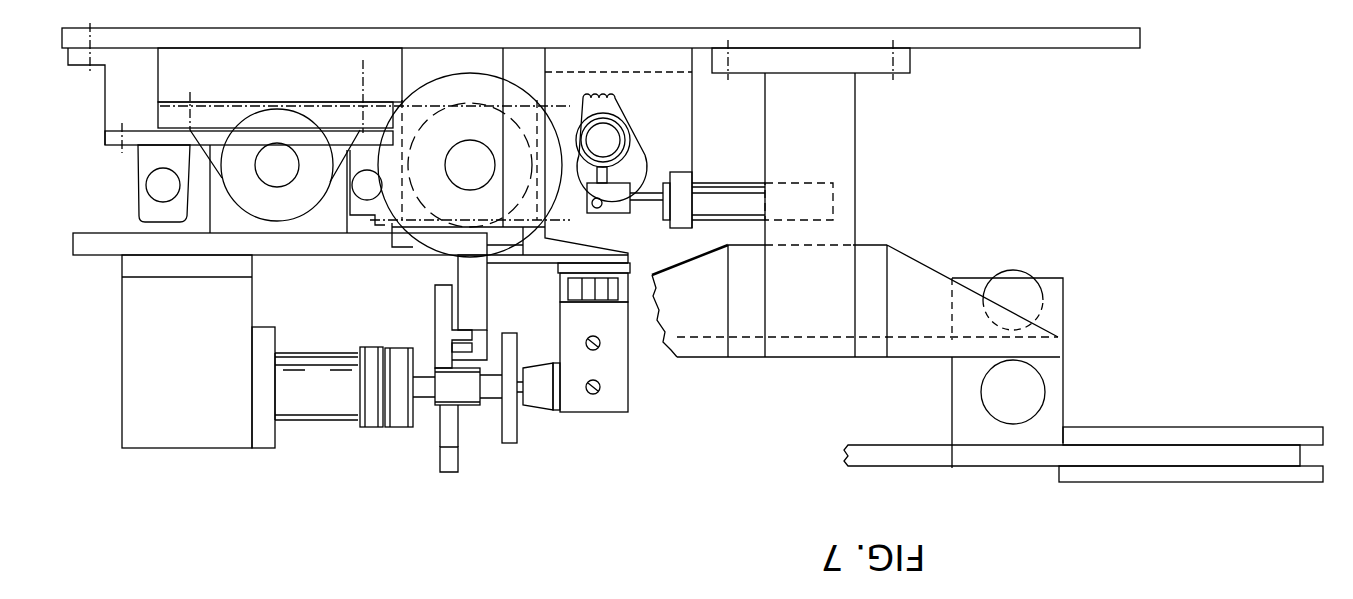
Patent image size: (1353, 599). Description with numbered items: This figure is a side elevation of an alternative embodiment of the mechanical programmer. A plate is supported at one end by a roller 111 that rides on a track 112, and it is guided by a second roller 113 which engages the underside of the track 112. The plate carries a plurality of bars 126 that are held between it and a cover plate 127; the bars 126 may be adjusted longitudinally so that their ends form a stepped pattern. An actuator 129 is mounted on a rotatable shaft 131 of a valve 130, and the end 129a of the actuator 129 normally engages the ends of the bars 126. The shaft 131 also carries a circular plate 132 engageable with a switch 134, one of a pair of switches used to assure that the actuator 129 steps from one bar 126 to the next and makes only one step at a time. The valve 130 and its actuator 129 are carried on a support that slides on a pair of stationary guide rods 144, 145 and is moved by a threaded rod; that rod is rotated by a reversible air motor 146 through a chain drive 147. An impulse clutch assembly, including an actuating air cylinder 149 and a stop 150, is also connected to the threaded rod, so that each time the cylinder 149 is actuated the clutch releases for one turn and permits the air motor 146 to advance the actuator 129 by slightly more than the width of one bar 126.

The roller 111 is at (983, 393).
The track 112 is at (942, 358).
The roller 113 is at (1017, 277).
The bars 126 is at (862, 468).
The cover plate 127 is at (1109, 482).
The actuator 129 is at (440, 428).
The end of the actuator 129a is at (440, 463).
The valve 130 is at (173, 448).
The shaft 131 is at (425, 370).
The circular plate 132 is at (510, 443).
The switch 134 is at (588, 403).
The guide rod 144 is at (158, 187).
The guide rod 145 is at (365, 207).
The air motor 146 is at (427, 253).
The chain drive 147 is at (323, 218).
The actuating air cylinder 149 is at (717, 183).
The stop 150 is at (623, 210).